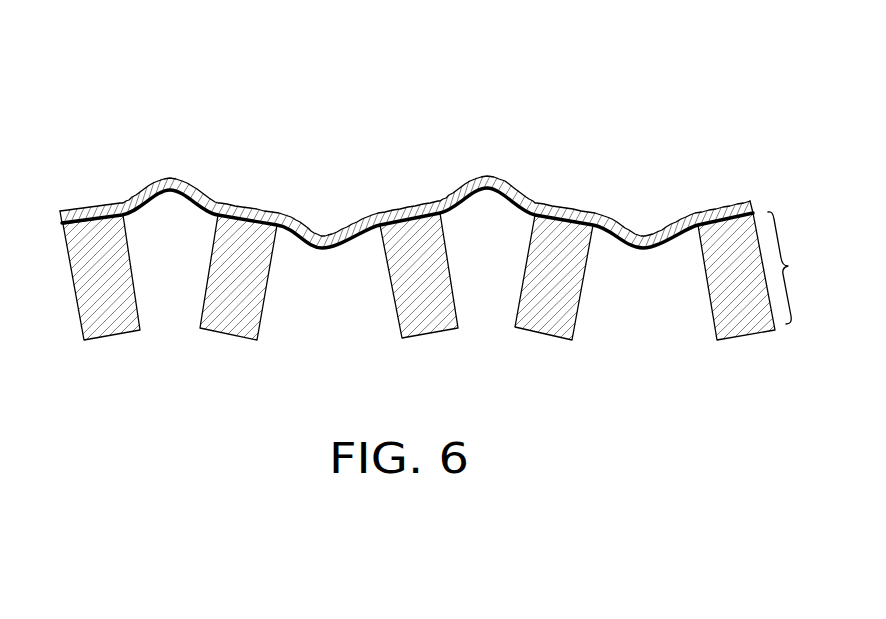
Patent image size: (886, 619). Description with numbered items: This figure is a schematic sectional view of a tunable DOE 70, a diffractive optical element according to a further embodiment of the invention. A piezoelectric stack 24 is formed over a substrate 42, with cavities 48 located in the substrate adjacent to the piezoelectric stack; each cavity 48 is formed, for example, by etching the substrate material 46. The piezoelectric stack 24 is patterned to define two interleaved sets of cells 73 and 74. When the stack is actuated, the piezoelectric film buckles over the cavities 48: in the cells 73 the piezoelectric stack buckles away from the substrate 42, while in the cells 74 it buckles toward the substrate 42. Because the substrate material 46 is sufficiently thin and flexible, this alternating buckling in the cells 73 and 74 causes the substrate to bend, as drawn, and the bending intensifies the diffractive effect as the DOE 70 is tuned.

The tunable DOE 70 is at (128, 70).
The piezoelectric stack 24 is at (744, 203).
The cells 73 is at (175, 176).
The cells 74 is at (323, 236).
The cavity 48 is at (192, 269).
The substrate material 46 is at (405, 323).
The substrate 42 is at (791, 268).